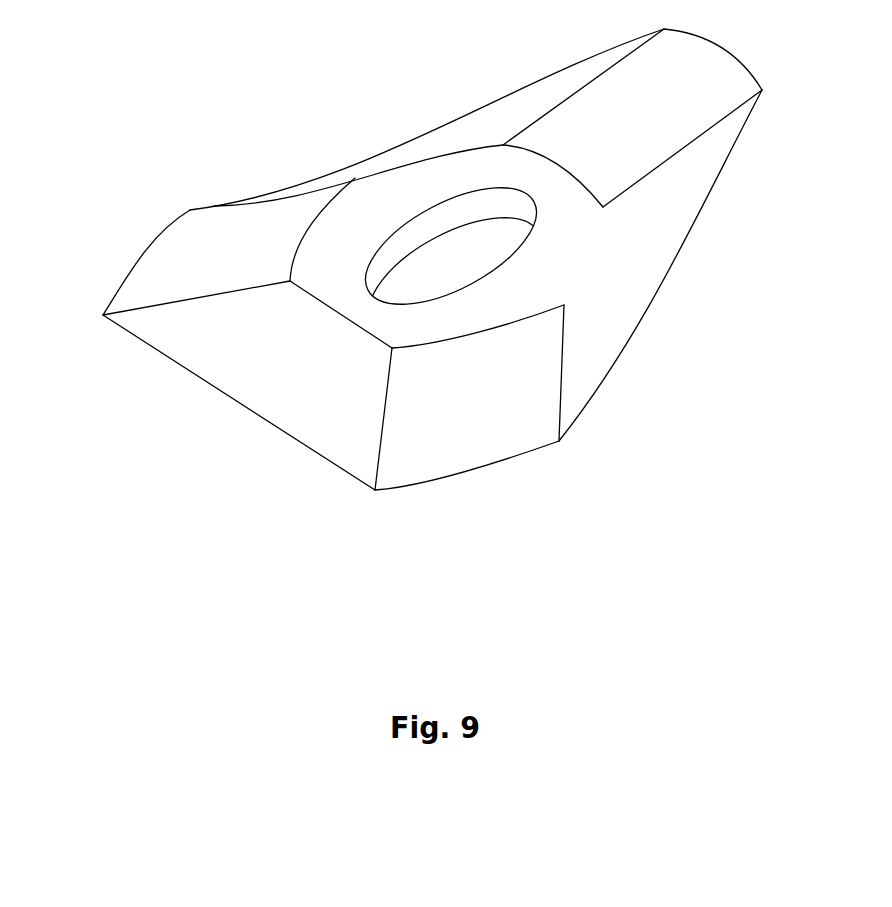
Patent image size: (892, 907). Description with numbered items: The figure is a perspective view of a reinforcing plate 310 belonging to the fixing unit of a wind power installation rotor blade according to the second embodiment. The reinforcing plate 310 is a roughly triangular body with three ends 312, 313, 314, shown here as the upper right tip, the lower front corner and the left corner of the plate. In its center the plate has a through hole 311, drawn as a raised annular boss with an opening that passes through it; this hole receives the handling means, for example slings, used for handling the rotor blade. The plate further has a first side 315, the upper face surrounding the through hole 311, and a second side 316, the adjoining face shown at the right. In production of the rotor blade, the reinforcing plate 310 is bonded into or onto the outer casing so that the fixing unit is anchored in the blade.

The reinforcing plate 310 is at (367, 150).
The through hole 311 is at (453, 261).
The end 312 is at (713, 46).
The end 313 is at (467, 482).
The end 314 is at (242, 350).
The first side 315 is at (446, 317).
The second side 316 is at (598, 400).